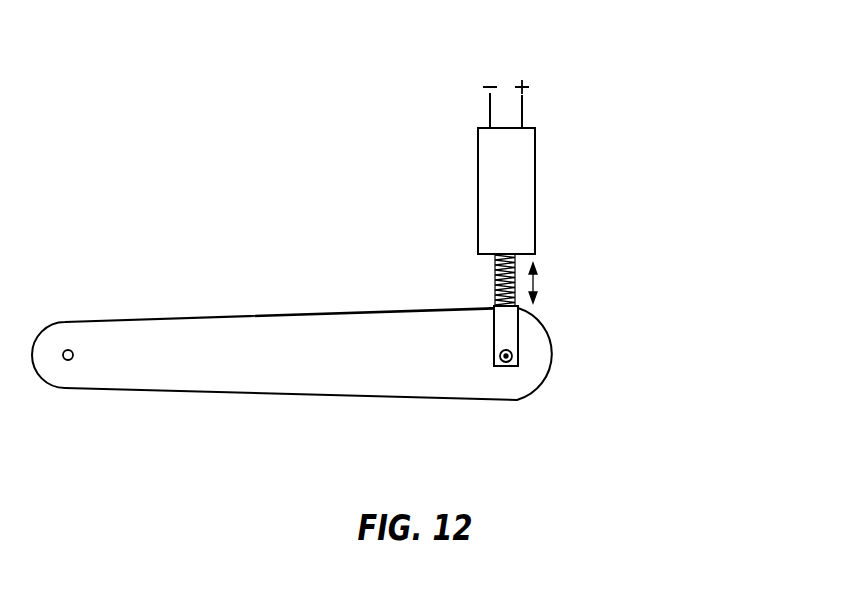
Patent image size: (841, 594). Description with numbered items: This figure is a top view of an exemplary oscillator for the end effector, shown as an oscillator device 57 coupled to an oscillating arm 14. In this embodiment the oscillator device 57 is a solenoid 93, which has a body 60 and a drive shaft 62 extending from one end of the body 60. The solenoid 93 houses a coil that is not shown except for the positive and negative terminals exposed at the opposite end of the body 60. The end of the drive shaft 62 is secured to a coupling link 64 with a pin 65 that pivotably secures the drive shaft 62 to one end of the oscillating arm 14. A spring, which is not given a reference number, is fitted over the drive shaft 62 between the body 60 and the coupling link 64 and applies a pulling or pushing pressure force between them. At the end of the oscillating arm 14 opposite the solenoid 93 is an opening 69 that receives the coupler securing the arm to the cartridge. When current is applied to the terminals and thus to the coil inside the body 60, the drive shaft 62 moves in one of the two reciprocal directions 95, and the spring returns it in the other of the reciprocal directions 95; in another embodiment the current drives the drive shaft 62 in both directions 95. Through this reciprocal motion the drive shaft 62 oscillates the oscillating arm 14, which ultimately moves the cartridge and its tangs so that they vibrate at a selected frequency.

The oscillating arm 14 is at (238, 367).
The oscillator device 57 is at (666, 118).
The body 60 is at (517, 187).
The drive shaft 62 is at (495, 290).
The coupling link 64 is at (513, 337).
The pin 65 is at (506, 363).
The opening 69 is at (70, 348).
The solenoid 93 is at (440, 183).
The reciprocal directions 95 is at (538, 282).